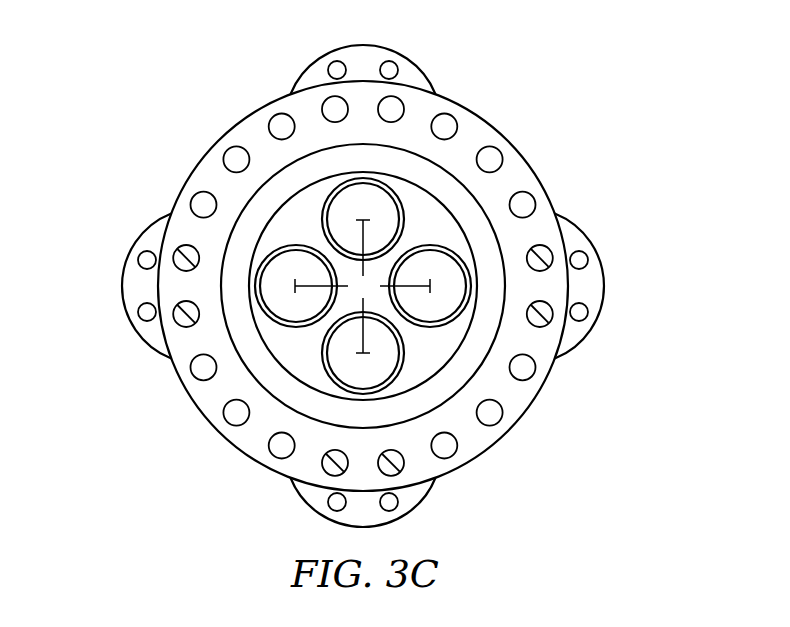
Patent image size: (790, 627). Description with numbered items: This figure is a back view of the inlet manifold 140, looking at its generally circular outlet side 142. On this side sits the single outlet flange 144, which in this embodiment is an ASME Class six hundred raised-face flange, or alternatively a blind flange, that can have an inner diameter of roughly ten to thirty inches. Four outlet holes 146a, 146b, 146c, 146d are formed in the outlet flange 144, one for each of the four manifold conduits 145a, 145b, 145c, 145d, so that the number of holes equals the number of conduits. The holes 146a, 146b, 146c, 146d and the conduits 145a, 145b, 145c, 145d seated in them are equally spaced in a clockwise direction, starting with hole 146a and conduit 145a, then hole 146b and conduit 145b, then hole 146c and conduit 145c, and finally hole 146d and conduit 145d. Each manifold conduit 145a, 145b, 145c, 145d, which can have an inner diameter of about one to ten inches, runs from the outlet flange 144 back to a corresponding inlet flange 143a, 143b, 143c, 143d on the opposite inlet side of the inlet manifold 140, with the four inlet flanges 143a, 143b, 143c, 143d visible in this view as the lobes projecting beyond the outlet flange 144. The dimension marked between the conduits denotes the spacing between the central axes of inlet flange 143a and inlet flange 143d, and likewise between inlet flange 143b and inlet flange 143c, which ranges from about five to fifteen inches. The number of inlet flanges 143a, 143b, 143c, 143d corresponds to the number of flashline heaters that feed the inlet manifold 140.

The inlet manifold 140 is at (509, 87).
The outlet side 142 is at (300, 109).
The inlet flange 143a is at (323, 513).
The inlet flange 143b is at (150, 348).
The inlet flange 143c is at (597, 327).
The inlet flange 143d is at (335, 48).
The outlet flange 144 is at (473, 435).
The manifold conduit 145a is at (322, 368).
The manifold conduit 145b is at (280, 250).
The manifold conduit 145c is at (462, 314).
The manifold conduit 145d is at (403, 200).
The outlet hole 146a is at (400, 360).
The outlet hole 146b is at (285, 325).
The outlet hole 146c is at (408, 258).
The outlet hole 146d is at (327, 197).